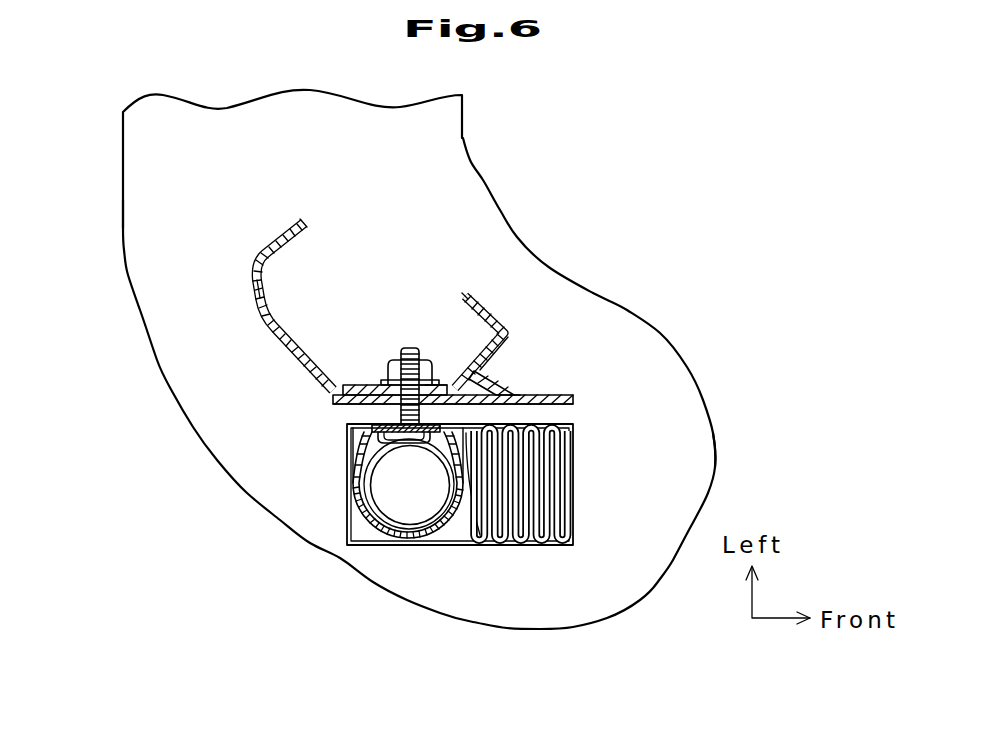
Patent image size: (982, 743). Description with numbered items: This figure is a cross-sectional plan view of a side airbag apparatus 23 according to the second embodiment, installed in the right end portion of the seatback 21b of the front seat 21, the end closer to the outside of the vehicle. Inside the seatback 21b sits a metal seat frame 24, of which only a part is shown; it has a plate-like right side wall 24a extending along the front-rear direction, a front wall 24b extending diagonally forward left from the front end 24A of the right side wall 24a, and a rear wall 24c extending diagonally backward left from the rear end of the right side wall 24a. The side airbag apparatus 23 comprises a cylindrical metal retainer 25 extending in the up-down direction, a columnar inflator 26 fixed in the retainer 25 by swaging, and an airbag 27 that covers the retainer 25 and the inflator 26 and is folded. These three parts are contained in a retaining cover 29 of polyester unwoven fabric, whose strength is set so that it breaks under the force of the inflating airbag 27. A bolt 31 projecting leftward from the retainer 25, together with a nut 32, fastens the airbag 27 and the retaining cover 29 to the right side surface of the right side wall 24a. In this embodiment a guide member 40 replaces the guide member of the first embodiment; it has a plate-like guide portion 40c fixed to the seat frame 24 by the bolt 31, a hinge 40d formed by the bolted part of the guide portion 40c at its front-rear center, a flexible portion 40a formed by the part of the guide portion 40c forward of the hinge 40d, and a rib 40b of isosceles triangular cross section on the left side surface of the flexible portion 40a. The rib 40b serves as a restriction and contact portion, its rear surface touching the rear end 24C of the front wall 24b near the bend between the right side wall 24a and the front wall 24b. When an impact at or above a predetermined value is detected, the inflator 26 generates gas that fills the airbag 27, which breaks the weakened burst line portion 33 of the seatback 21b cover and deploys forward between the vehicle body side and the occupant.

The front seat 21 is at (123, 153).
The seatback 21b is at (123, 225).
The side airbag apparatus 23 is at (406, 505).
The seat frame 24 is at (258, 296).
The right side wall 24a is at (347, 385).
The front wall 24b is at (485, 344).
The rear wall 24c is at (280, 317).
The front end 24A is at (443, 385).
The rear end 24C is at (480, 367).
The retainer 25 is at (448, 541).
The inflator 26 is at (410, 513).
The airbag 27 is at (508, 542).
The retaining cover 29 is at (568, 545).
The bolt 31 is at (400, 360).
The nut 32 is at (403, 347).
The burst line portion 33 is at (714, 483).
The guide member 40 is at (469, 402).
The flexible portion 40a is at (573, 399).
The rib 40b is at (490, 384).
The guide portion 40c is at (514, 392).
The hinge 40d is at (427, 408).